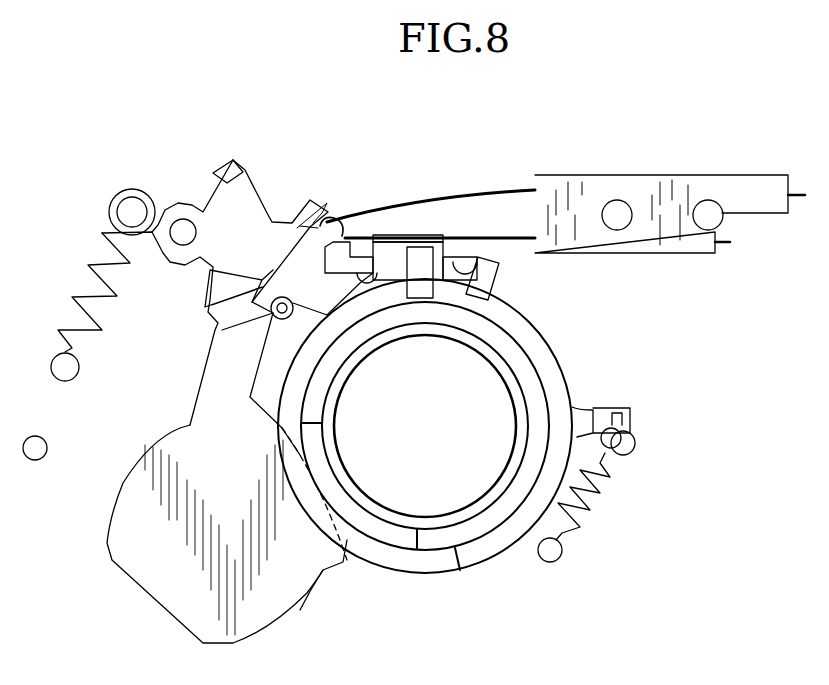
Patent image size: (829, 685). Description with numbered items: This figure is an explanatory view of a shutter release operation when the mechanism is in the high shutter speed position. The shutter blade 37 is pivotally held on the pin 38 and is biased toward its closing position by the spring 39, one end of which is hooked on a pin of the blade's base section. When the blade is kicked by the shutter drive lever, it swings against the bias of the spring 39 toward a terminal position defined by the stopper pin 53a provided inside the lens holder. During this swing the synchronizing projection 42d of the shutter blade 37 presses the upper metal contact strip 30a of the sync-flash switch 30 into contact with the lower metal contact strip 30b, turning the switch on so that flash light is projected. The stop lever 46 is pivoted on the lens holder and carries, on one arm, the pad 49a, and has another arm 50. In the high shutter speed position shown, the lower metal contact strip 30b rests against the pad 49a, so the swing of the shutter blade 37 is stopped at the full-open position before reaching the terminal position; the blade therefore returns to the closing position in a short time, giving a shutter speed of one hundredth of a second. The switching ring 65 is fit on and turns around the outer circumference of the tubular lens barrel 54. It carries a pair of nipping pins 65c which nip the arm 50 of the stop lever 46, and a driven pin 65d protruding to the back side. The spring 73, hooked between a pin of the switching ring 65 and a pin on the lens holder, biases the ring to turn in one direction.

The sync-flash switch 30 is at (622, 175).
The upper metal contact strip 30a is at (516, 188).
The lower metal contact strip 30b is at (512, 238).
The shutter blade 37 is at (162, 597).
The pin 38 is at (183, 225).
The spring 39 is at (90, 278).
The synchronizing projection 42d is at (313, 198).
The stop lever 46 is at (413, 240).
The pad 49a is at (342, 228).
The arm 50 is at (466, 258).
The stopper pin 53a is at (35, 452).
The lens barrel 54 is at (457, 562).
The switching ring 65 is at (562, 385).
The nipping pins 65c is at (503, 290).
The driven pin 65d is at (640, 443).
The spring 73 is at (600, 508).